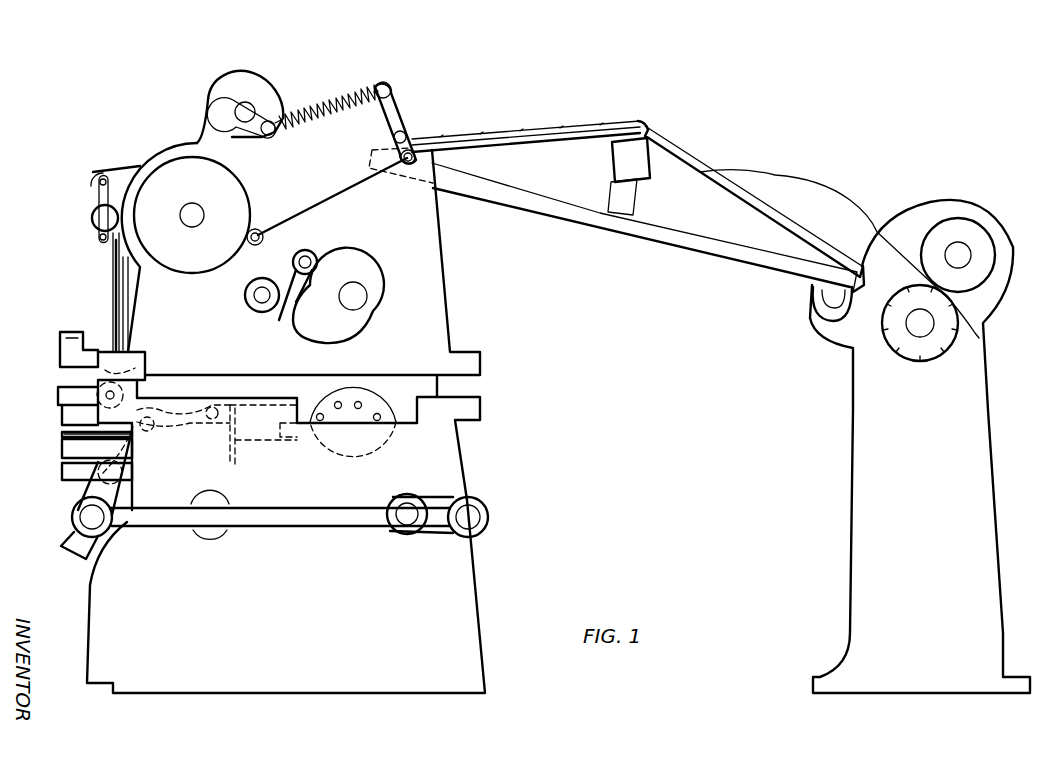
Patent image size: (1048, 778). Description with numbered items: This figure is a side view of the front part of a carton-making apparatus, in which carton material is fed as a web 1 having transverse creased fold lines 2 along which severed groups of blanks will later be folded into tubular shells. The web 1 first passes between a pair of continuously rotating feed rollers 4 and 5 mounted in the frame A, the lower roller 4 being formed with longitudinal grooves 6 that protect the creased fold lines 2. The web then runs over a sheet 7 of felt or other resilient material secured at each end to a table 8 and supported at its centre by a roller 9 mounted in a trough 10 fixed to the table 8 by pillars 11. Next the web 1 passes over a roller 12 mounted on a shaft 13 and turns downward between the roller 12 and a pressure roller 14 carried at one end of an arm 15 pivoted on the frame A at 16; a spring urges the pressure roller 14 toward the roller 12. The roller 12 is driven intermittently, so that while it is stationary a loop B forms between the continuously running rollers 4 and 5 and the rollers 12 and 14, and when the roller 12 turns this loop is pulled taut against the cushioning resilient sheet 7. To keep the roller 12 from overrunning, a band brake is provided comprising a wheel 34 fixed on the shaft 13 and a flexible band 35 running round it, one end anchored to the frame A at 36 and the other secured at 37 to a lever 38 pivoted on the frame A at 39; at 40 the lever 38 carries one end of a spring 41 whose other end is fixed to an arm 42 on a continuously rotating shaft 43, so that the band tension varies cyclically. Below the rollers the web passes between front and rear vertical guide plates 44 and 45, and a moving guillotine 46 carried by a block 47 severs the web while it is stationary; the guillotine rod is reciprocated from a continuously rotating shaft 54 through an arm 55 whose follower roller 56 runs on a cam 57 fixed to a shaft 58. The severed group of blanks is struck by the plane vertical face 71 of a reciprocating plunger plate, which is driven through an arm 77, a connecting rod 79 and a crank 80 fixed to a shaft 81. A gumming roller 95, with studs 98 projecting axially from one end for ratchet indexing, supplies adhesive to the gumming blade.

The web 1 is at (548, 131).
The fold lines 2 is at (813, 178).
The lower feed roller 4 is at (905, 349).
The upper feed roller 5 is at (966, 226).
The longitudinal grooves 6 is at (885, 343).
The resilient sheet 7 is at (713, 177).
The table 8 is at (688, 245).
The roller 9 is at (645, 133).
The trough 10 is at (616, 162).
The pillars 11 is at (630, 196).
The roller 12 is at (163, 155).
The shaft 13 is at (204, 215).
The pressure roller 14 is at (92, 218).
The arm 15 is at (98, 198).
The pivot 16 is at (102, 179).
The brake wheel 34 is at (222, 190).
The flexible band 35 is at (318, 212).
The band anchor point 36 is at (259, 234).
The band attachment point 37 is at (416, 158).
The lever 38 is at (405, 100).
The lever pivot 39 is at (406, 133).
The spring attachment point 40 is at (382, 82).
The spring 41 is at (328, 103).
The arm 42 is at (270, 122).
The shaft 43 is at (247, 103).
The front vertical guide plate 44 is at (129, 293).
The rear vertical guide plate 45 is at (112, 280).
The moving guillotine 46 is at (136, 366).
The block 47 is at (72, 338).
The shaft 54 is at (249, 300).
The arm 55 is at (283, 318).
The follower roller 56 is at (314, 258).
The cam 57 is at (372, 268).
The shaft 58 is at (368, 296).
The plane vertical face 71 is at (244, 446).
The arm 77 is at (120, 497).
The connecting rod 79 is at (309, 508).
The crank 80 is at (431, 500).
The shaft 81 is at (396, 509).
The gumming roller 95 is at (376, 410).
The studs 98 is at (336, 403).
The frame A is at (453, 331).
The loop B is at (858, 206).